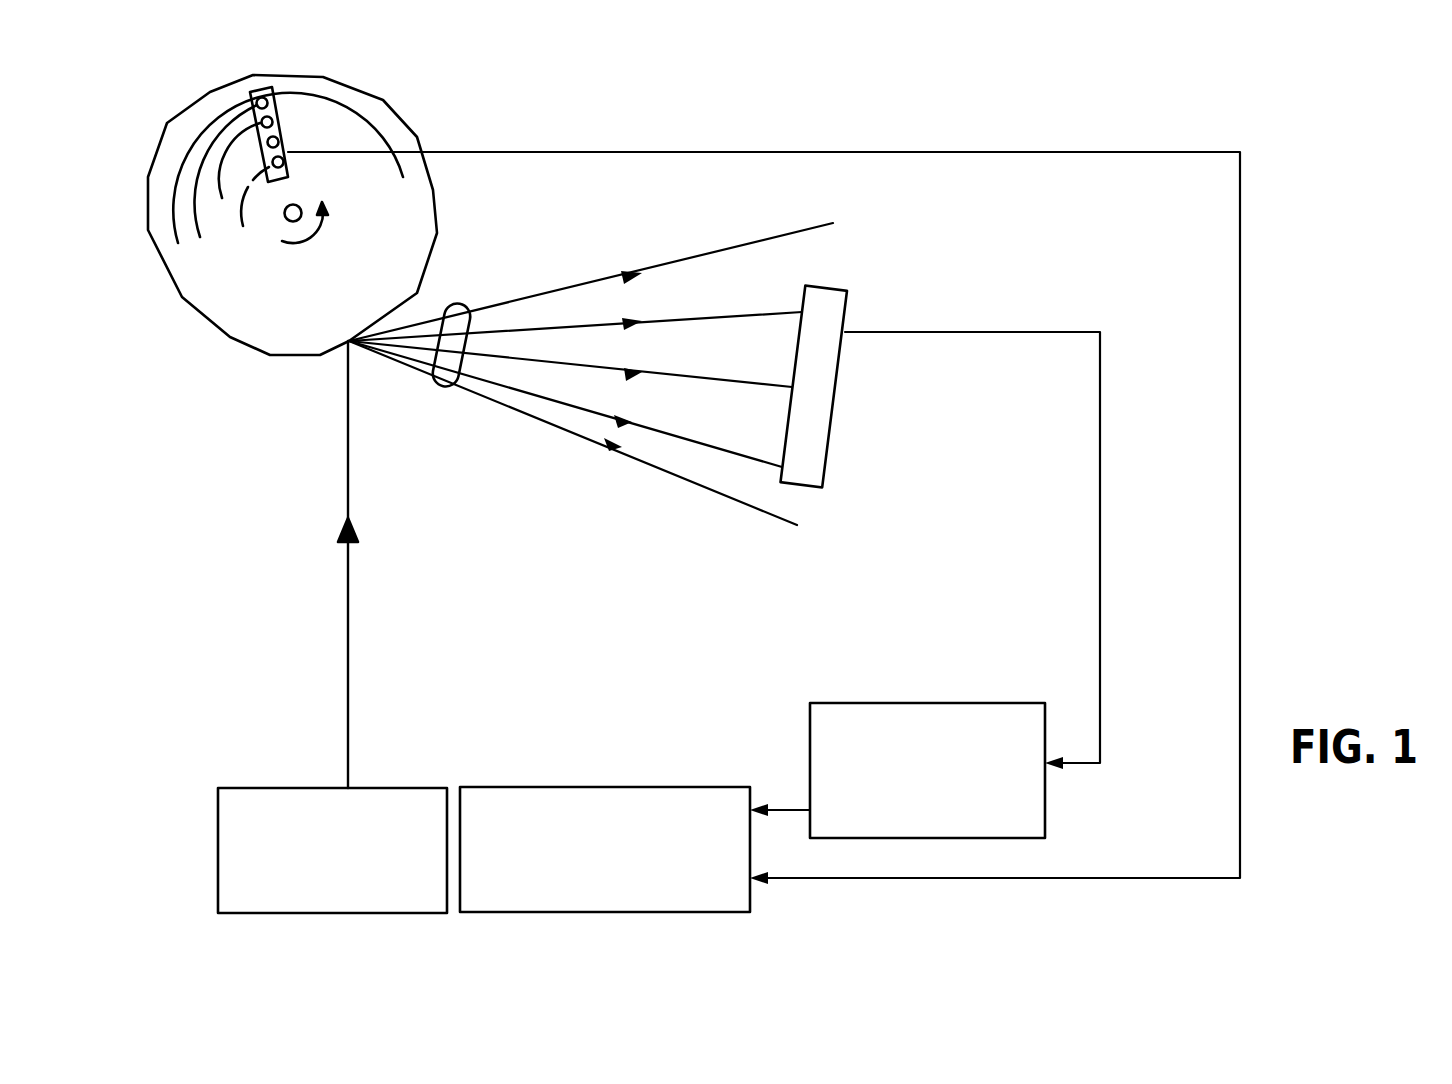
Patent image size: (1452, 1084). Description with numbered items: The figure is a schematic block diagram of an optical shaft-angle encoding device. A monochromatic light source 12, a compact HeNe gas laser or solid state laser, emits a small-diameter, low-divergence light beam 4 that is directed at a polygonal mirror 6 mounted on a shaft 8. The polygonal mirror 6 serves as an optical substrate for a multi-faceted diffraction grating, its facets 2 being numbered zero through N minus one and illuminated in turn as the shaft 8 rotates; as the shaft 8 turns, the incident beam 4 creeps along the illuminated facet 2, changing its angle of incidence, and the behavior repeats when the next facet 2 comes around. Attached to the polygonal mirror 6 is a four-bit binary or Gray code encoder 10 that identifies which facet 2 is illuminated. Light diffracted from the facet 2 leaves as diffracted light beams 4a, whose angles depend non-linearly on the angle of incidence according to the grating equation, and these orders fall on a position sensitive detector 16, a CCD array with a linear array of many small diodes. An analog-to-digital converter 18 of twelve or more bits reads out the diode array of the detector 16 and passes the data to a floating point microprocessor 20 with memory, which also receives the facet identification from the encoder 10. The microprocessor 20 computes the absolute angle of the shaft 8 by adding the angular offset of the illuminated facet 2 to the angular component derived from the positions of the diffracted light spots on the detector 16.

The facet 2 is at (398, 120).
The light beam 4 is at (348, 585).
The diffracted light beams 4a is at (463, 297).
The polygonal mirror 6 is at (198, 297).
The shaft 8 is at (293, 204).
The encoder 10 is at (273, 90).
The monochromatic light source 12 is at (218, 846).
The position sensitive detector 16 is at (830, 287).
The analog-to-digital converter 18 is at (938, 702).
The microprocessor 20 is at (605, 787).